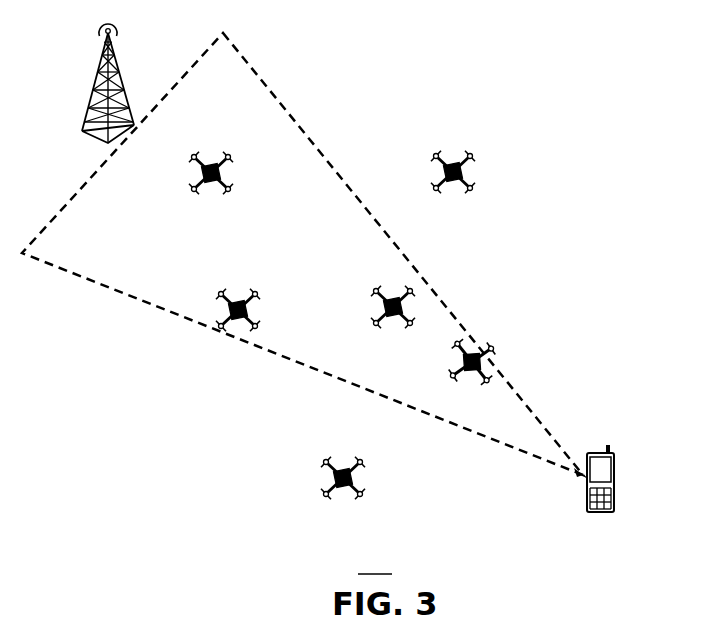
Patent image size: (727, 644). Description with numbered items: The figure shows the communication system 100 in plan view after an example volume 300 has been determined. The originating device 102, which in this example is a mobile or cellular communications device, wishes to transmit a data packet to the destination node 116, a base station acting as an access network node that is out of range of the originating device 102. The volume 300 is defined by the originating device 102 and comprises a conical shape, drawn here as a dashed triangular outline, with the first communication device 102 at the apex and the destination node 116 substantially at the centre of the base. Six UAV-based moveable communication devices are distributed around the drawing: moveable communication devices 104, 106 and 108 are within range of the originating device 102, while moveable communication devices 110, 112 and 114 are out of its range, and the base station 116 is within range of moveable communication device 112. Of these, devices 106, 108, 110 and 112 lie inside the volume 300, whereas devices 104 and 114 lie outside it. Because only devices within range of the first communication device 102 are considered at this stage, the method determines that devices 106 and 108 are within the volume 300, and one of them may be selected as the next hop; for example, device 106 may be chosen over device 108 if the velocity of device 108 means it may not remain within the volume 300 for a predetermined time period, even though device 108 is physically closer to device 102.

The communication system 100 is at (375, 563).
The originating device 102 is at (615, 470).
The moveable communication device 104 is at (360, 462).
The moveable communication device 106 is at (409, 293).
The moveable communication device 108 is at (490, 344).
The moveable communication device 110 is at (253, 296).
The moveable communication device 112 is at (230, 190).
The moveable communication device 114 is at (470, 157).
The destination node 116 is at (97, 84).
The volume 300 is at (263, 80).